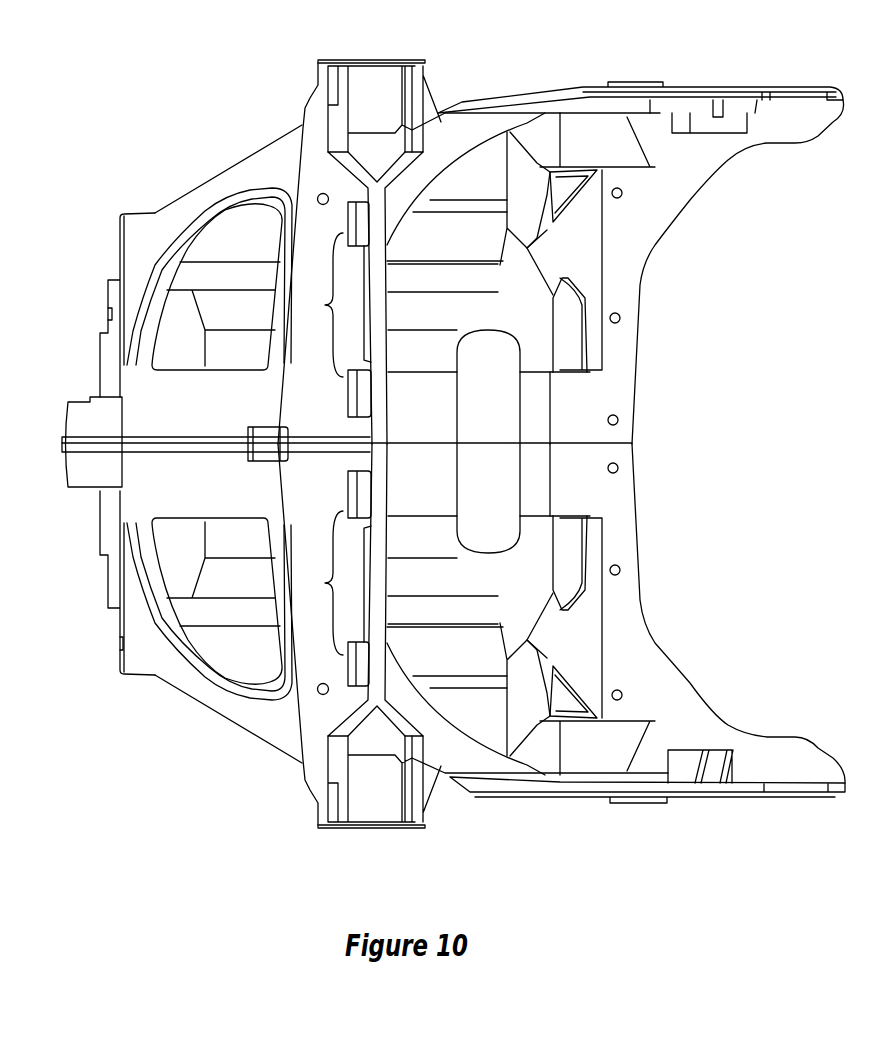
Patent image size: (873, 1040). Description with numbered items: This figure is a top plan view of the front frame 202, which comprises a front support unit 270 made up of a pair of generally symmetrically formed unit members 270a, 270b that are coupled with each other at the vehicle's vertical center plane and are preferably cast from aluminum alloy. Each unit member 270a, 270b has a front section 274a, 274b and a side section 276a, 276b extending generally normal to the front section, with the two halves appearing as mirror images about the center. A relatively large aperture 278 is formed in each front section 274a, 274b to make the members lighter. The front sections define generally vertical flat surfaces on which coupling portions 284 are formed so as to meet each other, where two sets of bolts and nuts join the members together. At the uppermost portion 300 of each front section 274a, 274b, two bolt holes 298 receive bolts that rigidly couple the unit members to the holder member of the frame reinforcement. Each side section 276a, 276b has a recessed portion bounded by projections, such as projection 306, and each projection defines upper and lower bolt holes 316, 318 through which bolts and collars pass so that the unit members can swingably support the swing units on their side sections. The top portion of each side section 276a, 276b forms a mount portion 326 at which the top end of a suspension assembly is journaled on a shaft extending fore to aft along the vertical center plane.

The front frame 202 is at (456, 70).
The front support unit 270 is at (85, 352).
The unit member 270a is at (266, 155).
The unit member 270b is at (273, 736).
The front section 274a is at (217, 183).
The front section 274b is at (232, 710).
The side section 276a is at (563, 100).
The side section 276b is at (573, 790).
The aperture 278 is at (212, 240).
The coupling portions 284 is at (82, 490).
The bolt holes 298 is at (334, 444).
The uppermost portion 300 is at (357, 323).
The projection 306 is at (137, 225).
The bolt hole 316 is at (118, 645).
The bolt hole 318 is at (108, 312).
The mount portion 326 is at (350, 88).